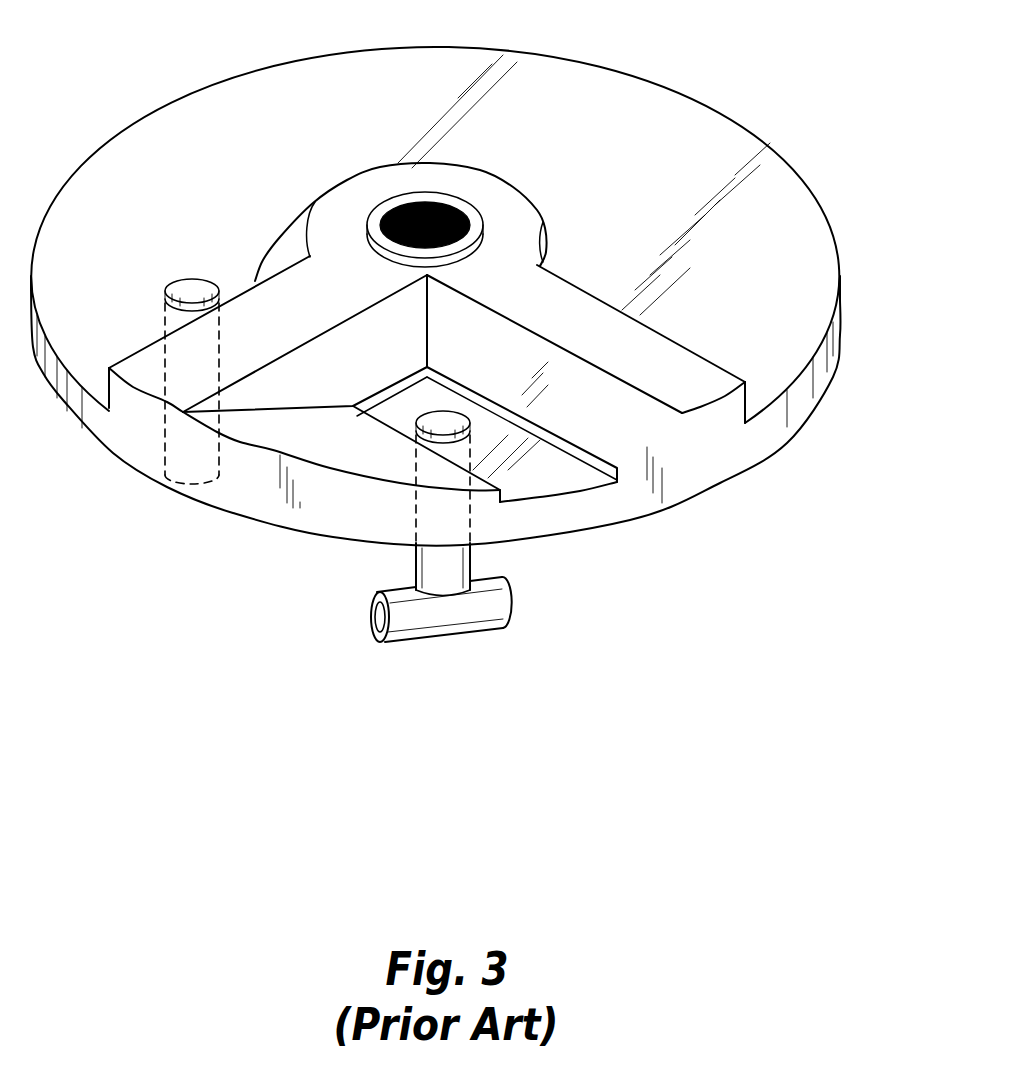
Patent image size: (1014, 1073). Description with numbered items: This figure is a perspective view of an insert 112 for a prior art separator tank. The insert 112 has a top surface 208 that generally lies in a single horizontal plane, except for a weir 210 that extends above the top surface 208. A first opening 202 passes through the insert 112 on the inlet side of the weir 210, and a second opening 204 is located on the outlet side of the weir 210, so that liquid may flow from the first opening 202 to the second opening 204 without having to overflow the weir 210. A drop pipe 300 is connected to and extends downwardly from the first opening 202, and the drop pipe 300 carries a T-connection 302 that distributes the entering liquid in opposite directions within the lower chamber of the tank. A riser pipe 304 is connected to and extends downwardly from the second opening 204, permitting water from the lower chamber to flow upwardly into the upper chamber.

The insert 112 is at (808, 178).
The first opening 202 is at (423, 417).
The second opening 204 is at (193, 287).
The top surface 208 is at (728, 130).
The weir 210 is at (608, 330).
The drop pipe 300 is at (466, 555).
The T-connection 302 is at (503, 600).
The riser pipe 304 is at (163, 447).